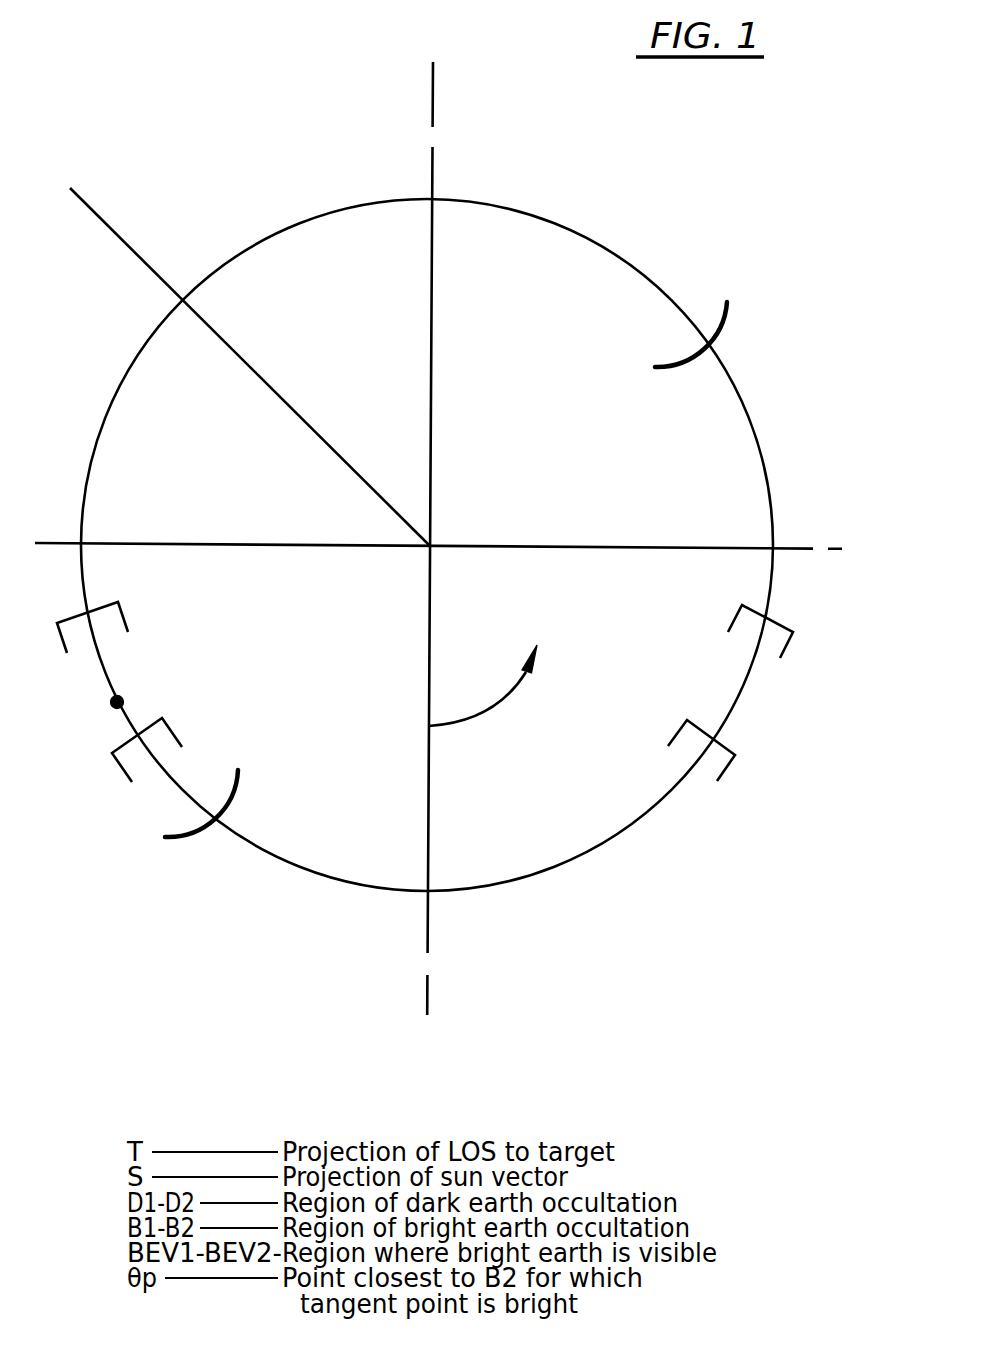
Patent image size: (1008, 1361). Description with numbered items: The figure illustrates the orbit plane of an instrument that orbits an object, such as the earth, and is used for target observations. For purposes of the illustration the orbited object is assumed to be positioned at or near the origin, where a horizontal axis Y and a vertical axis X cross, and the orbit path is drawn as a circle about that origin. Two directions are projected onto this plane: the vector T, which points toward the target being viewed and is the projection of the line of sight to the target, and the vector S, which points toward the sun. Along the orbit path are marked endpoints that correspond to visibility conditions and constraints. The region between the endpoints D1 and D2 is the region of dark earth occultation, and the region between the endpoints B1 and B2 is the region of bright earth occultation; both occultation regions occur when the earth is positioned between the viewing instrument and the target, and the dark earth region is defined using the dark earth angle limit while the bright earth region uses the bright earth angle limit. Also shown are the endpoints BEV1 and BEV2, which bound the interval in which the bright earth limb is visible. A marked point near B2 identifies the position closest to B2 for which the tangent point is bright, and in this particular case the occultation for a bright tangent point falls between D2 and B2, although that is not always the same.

The projection of LOS to target T is at (433, 507).
The projection of sun vector S is at (233, 346).
The X axis X is at (427, 1044).
The Y axis Y is at (464, 551).
The dark earth occultation region endpoint D1 is at (709, 759).
The dark earth occultation region endpoint D2 is at (141, 761).
The bright earth occultation region endpoint B1 is at (772, 639).
The bright earth occultation region endpoint B2 is at (90, 644).
The bright earth visible region endpoint BEV1 is at (721, 334).
The bright earth visible region endpoint BEV2 is at (191, 821).